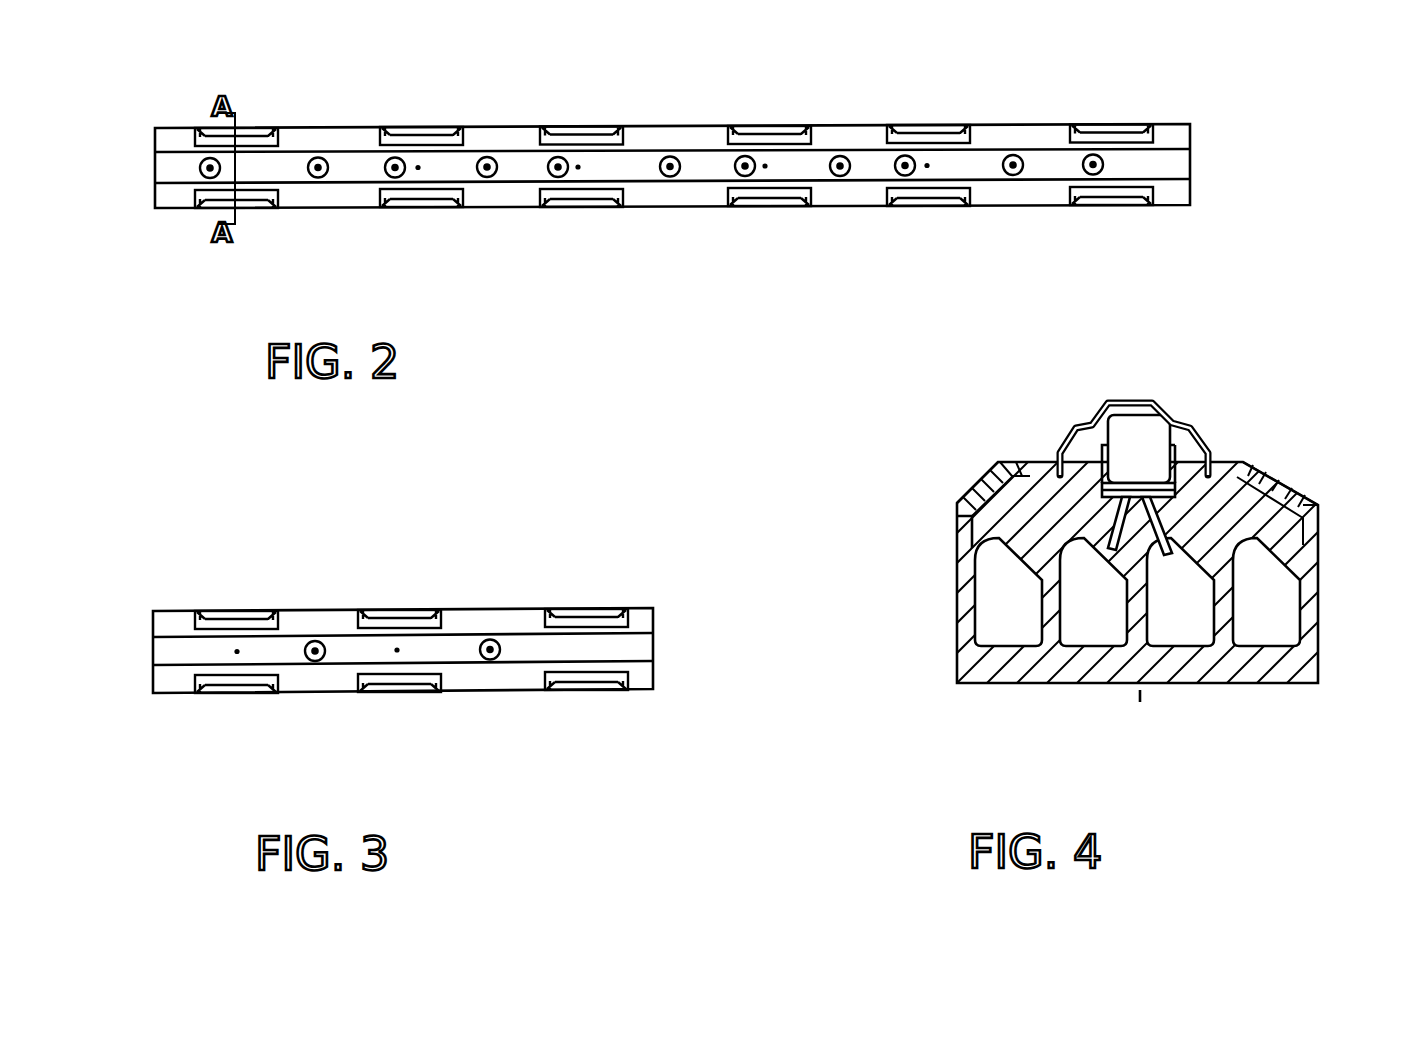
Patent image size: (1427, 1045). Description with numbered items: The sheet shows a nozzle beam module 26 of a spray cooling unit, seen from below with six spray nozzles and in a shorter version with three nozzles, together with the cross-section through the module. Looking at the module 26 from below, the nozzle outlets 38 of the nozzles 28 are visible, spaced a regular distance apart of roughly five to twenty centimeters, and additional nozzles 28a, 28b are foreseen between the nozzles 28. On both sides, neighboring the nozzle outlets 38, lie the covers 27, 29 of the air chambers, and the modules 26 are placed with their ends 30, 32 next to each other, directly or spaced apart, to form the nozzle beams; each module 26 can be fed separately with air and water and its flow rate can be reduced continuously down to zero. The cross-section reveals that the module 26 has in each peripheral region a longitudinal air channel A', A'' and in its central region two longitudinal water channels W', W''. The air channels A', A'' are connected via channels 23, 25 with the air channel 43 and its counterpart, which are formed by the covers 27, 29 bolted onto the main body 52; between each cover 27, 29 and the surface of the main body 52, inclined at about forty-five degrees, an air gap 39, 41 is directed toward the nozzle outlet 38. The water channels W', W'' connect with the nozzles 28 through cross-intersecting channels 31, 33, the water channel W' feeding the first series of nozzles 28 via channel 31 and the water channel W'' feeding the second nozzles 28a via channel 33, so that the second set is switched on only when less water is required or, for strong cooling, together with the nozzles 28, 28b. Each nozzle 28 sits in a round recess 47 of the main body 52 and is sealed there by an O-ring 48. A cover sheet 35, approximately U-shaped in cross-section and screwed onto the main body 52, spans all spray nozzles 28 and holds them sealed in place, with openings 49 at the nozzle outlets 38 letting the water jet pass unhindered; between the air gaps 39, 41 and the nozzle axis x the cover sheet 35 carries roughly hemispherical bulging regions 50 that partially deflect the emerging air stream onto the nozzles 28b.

In FIG. 4, the channel 23 is at (970, 534).
In FIG. 4, the channel 25 is at (1305, 530).
In FIG. 2, the module 26 is at (418, 251).
In FIG. 3, the module 26 is at (256, 736).
In FIG. 4, the module 26 is at (1040, 715).
In FIG. 2, the cover 27 is at (770, 132).
In FIG. 3, the cover 27 is at (582, 612).
In FIG. 4, the cover 27 is at (975, 492).
In FIG. 4, the nozzle 28 is at (1160, 432).
In FIG. 2, the additional nozzle 28a is at (742, 155).
In FIG. 2, the additional nozzle 28b is at (667, 156).
In FIG. 3, the additional nozzle 28b is at (486, 638).
In FIG. 2, the cover 29 is at (775, 198).
In FIG. 3, the cover 29 is at (588, 689).
In FIG. 4, the cover 29 is at (1290, 484).
In FIG. 2, the end 30 is at (157, 178).
In FIG. 3, the end 30 is at (155, 657).
In FIG. 4, the cross-intersecting channel 31 is at (1118, 522).
In FIG. 2, the end 32 is at (1192, 172).
In FIG. 3, the end 32 is at (655, 651).
In FIG. 4, the cross-intersecting channel 33 is at (1157, 523).
In FIG. 4, the cover sheet 35 is at (1089, 416).
In FIG. 2, the nozzle outlet 38 is at (1108, 165).
In FIG. 3, the nozzle outlet 38 is at (582, 649).
In FIG. 4, the nozzle outlet 38 is at (1155, 400).
In FIG. 4, the air gap 39 is at (1035, 460).
In FIG. 2, the air gap 41 is at (792, 172).
In FIG. 4, the air gap 41 is at (1242, 462).
In FIG. 4, the air channel 43 is at (1318, 508).
In FIG. 4, the round recess 47 is at (1066, 440).
In FIG. 4, the O-ring 48 is at (1095, 488).
In FIG. 4, the opening 49 is at (1112, 401).
In FIG. 4, the bulging region 50 is at (1212, 430).
In FIG. 2, the main body 52 is at (522, 208).
In FIG. 3, the main body 52 is at (338, 694).
In FIG. 4, the main body 52 is at (997, 674).
In FIG. 4, the nozzle axis x is at (1140, 400).
In FIG. 4, the longitudinal air channel A' is at (968, 601).
In FIG. 4, the longitudinal air channel A'' is at (1315, 600).
In FIG. 4, the longitudinal water channel W' is at (1093, 637).
In FIG. 4, the longitudinal water channel W'' is at (1180, 637).